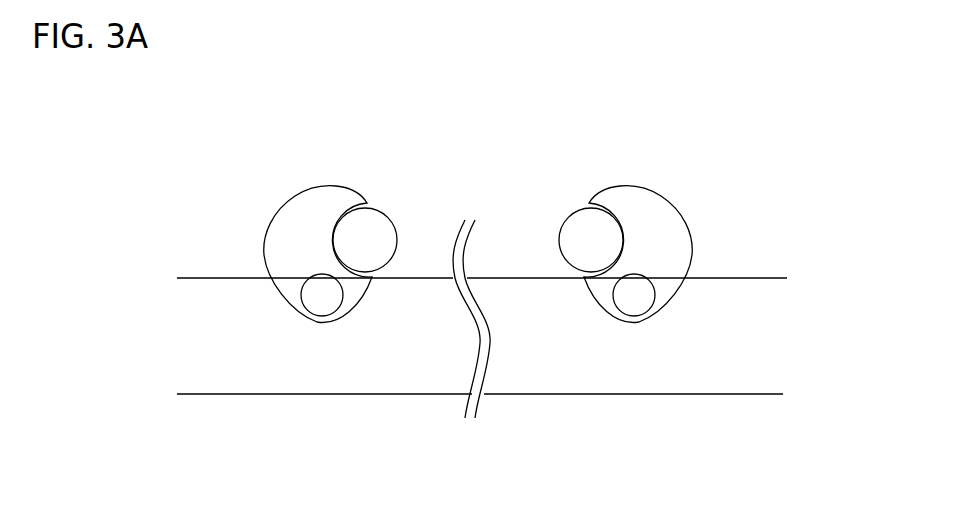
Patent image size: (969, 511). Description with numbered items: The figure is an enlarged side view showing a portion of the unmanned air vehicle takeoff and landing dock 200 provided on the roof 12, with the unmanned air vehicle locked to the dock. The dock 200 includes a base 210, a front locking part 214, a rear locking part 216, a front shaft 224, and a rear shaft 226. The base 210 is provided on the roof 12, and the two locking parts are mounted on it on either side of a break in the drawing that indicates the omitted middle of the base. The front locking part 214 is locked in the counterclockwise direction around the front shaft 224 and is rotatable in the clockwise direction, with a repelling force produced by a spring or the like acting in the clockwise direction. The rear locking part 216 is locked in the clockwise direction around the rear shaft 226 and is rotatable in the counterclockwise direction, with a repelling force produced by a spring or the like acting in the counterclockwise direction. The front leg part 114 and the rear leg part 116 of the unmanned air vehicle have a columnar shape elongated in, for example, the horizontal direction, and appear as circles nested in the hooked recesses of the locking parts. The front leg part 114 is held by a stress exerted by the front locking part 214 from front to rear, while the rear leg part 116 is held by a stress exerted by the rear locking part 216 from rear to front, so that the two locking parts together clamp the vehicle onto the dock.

The unmanned air vehicle takeoff and landing dock 200 is at (714, 139).
The base 210 is at (768, 347).
The roof 12 is at (528, 408).
The front locking part 214 is at (693, 237).
The rear locking part 216 is at (263, 237).
The front leg part 114 is at (582, 208).
The rear leg part 116 is at (378, 208).
The front shaft 224 is at (634, 298).
The rear shaft 226 is at (323, 298).